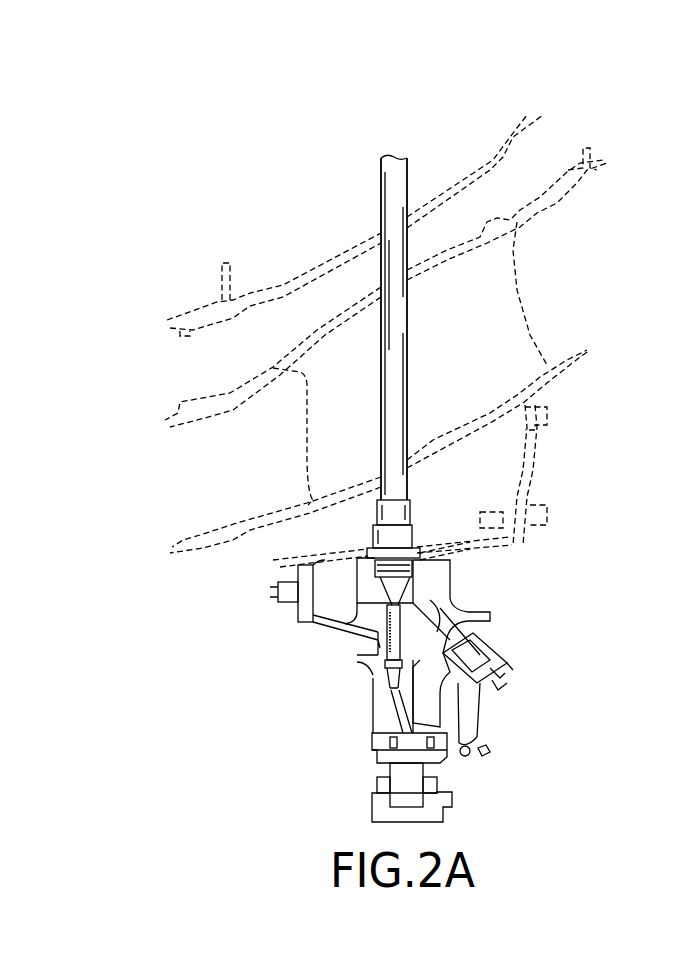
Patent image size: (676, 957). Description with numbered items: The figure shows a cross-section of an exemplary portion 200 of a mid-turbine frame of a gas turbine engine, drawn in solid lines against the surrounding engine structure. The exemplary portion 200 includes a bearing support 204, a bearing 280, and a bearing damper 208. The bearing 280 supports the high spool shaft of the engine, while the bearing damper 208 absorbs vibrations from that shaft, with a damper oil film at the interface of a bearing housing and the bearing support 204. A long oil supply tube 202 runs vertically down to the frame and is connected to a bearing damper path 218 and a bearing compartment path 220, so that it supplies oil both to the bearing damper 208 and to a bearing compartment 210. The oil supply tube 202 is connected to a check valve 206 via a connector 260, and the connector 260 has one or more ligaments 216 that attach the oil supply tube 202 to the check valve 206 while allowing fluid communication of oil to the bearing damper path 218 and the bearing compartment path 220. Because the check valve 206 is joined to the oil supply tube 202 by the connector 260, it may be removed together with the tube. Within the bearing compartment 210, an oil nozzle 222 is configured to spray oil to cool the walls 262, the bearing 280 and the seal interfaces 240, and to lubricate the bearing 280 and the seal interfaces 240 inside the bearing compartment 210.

The exemplary portion of mid-turbine frame 200 is at (192, 167).
The oil supply tube 202 is at (395, 373).
The bearing support 204 is at (367, 583).
The check valve 206 is at (470, 625).
The bearing damper 208 is at (343, 752).
The bearing compartment 210 is at (520, 655).
The ligaments 216 is at (395, 597).
The bearing damper path 218 is at (387, 680).
The bearing compartment path 220 is at (410, 620).
The oil nozzle 222 is at (472, 727).
The seal interfaces 240 is at (468, 797).
The connector 260 is at (380, 598).
The walls 262 is at (427, 697).
The bearing 280 is at (397, 787).